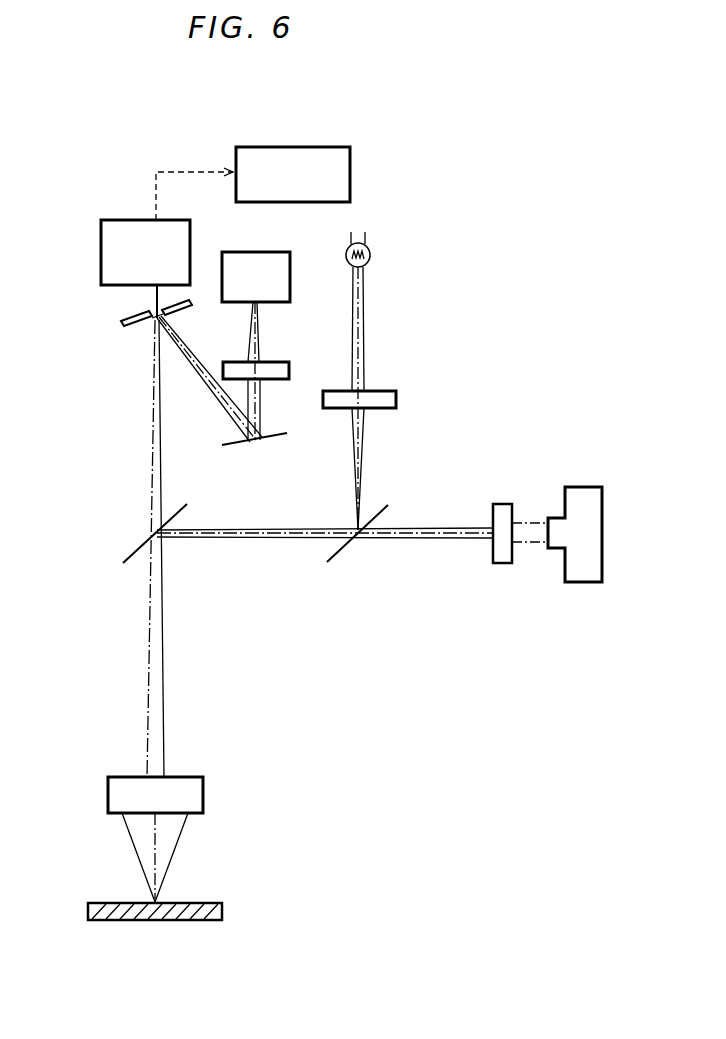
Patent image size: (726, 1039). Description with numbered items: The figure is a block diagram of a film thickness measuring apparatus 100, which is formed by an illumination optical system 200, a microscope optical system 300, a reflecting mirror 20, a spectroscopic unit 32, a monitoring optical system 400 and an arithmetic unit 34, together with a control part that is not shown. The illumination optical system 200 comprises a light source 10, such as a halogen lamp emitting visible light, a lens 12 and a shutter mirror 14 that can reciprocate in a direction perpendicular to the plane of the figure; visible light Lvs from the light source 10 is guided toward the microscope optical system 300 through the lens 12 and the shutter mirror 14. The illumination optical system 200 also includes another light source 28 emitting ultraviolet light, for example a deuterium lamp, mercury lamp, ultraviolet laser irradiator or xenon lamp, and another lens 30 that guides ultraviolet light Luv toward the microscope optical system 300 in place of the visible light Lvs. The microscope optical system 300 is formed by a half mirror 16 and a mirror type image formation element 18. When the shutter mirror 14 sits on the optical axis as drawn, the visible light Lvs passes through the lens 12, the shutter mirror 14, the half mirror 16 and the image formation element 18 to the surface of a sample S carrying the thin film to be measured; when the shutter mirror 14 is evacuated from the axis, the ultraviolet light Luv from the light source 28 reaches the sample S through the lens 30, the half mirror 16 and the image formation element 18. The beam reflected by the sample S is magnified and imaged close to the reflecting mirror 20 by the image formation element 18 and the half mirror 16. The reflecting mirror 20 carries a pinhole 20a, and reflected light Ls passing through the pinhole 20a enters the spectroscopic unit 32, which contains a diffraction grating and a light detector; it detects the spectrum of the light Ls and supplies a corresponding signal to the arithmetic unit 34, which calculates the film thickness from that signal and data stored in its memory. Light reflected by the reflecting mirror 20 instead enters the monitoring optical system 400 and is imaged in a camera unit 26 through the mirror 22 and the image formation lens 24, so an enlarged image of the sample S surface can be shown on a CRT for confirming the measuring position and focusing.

The film thickness measuring apparatus 100 is at (542, 167).
The illumination optical system 200 is at (479, 406).
The microscope optical system 300 is at (198, 680).
The monitoring optical system 400 is at (302, 260).
The light source 10 is at (371, 255).
The lens 12 is at (385, 391).
The shutter mirror 14 is at (340, 558).
The half mirror 16 is at (135, 551).
The mirror type image formation element 18 is at (203, 780).
The reflecting mirror 20 is at (124, 321).
The pinhole 20a is at (153, 322).
The mirror 22 is at (232, 445).
The image formation lens 24 is at (282, 362).
The camera unit 26 is at (275, 252).
The light source 28 is at (583, 487).
The lens 30 is at (500, 504).
The spectroscopic unit 32 is at (121, 220).
The arithmetic unit 34 is at (336, 147).
The sample S is at (199, 899).
The reflected light Ls is at (152, 302).
The visible light Lvs is at (365, 343).
The ultraviolet light Luv is at (457, 546).